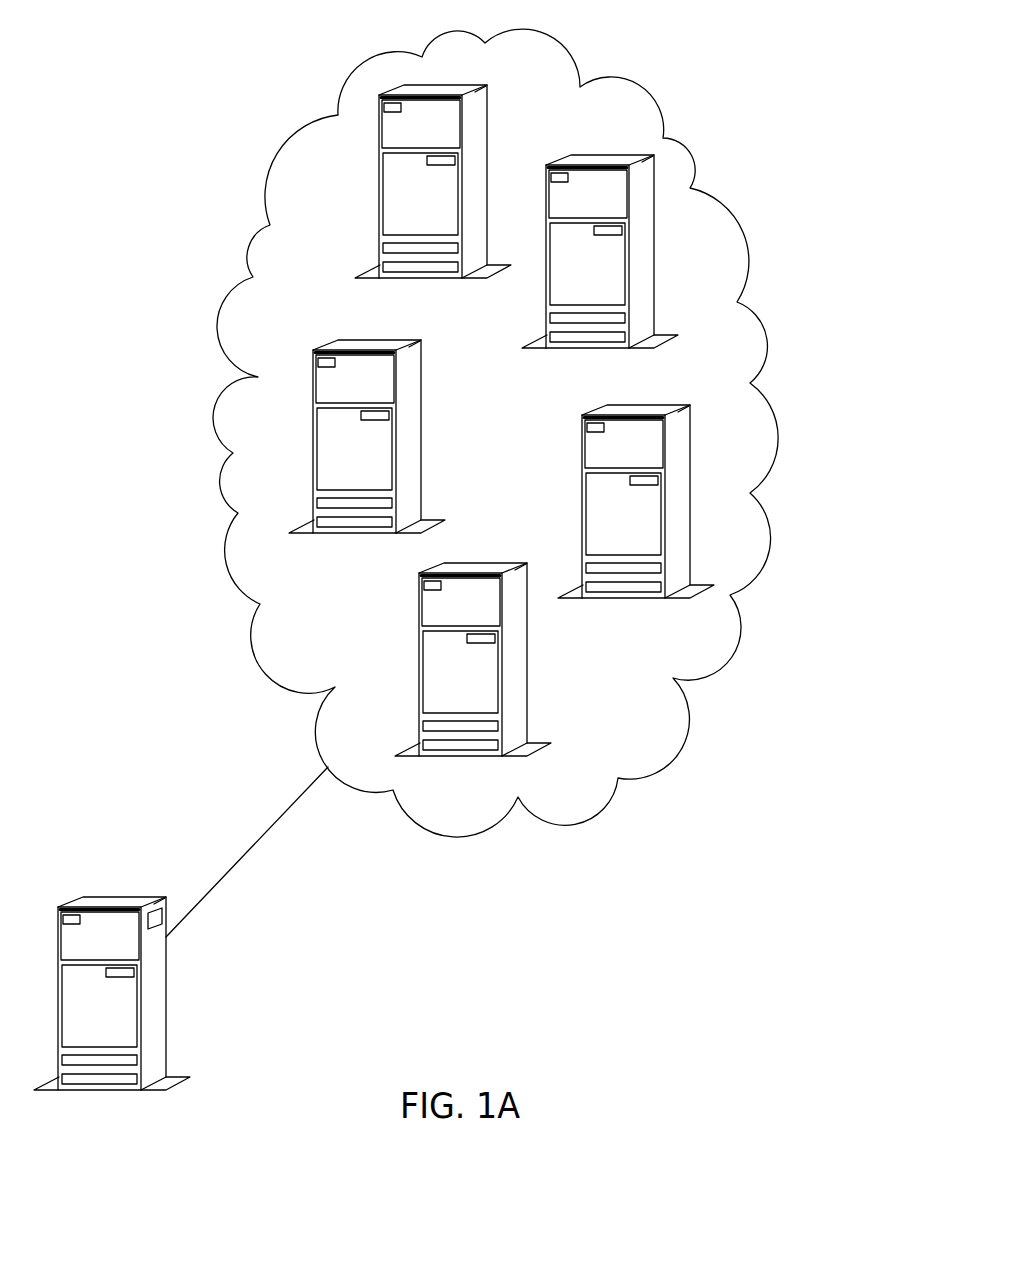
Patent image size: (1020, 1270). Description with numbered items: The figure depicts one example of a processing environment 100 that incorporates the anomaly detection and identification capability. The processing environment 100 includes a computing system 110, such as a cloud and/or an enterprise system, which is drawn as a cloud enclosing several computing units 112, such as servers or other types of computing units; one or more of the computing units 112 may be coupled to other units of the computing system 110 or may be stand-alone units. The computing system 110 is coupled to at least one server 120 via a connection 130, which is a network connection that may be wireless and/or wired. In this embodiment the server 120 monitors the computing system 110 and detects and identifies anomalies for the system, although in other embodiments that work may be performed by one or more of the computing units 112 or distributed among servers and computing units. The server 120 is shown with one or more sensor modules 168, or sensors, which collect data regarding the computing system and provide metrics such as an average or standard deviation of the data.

The processing environment 100 is at (133, 55).
The computing system 110 is at (638, 83).
The computing units 112 is at (595, 155).
The server 120 is at (157, 1011).
The connection 130 is at (252, 847).
The sensor modules 168 is at (162, 913).